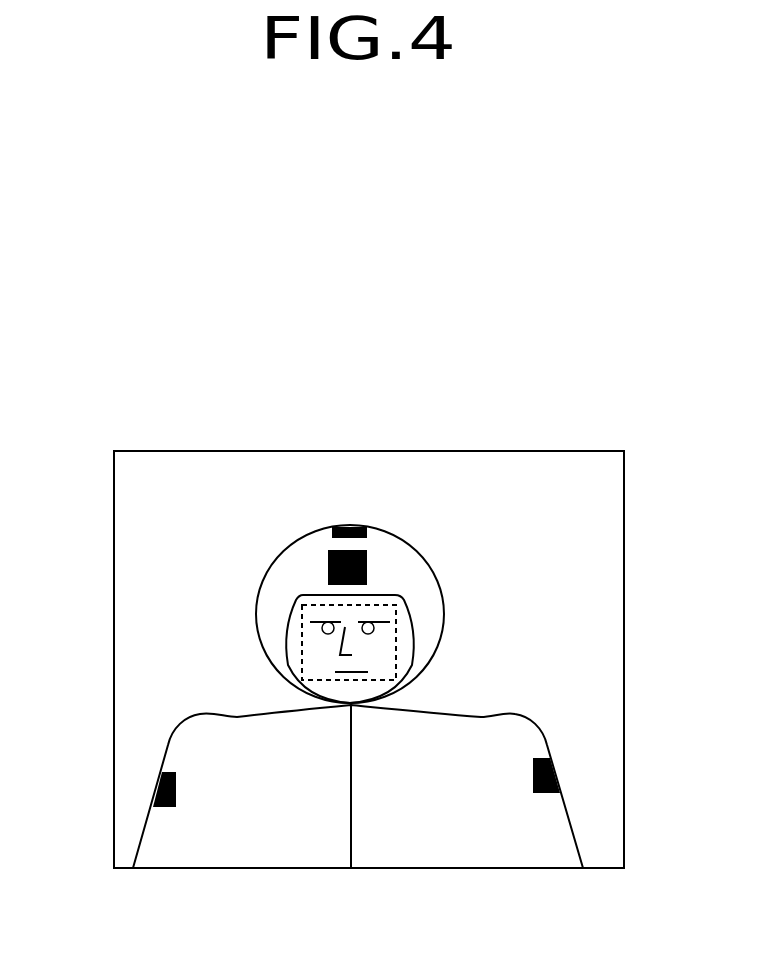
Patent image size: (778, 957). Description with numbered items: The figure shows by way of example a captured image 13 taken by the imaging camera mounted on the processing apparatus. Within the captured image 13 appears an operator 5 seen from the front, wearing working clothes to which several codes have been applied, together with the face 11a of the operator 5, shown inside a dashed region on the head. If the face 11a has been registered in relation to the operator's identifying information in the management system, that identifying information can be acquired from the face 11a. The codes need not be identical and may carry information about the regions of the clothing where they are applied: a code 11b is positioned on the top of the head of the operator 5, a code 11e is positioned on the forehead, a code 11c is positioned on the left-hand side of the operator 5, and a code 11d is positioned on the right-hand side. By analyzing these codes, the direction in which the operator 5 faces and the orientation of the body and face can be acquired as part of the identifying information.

The captured image 13 is at (482, 451).
The operator 5 is at (210, 713).
The face 11a is at (397, 645).
The code positioned on the head 11b is at (348, 527).
The code positioned on the forehead 11e is at (366, 562).
The code positioned on the right-hand side 11d is at (157, 787).
The code positioned on the left-hand side 11c is at (556, 775).